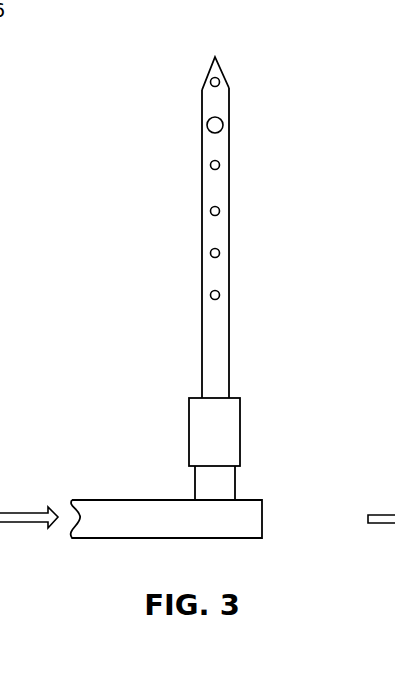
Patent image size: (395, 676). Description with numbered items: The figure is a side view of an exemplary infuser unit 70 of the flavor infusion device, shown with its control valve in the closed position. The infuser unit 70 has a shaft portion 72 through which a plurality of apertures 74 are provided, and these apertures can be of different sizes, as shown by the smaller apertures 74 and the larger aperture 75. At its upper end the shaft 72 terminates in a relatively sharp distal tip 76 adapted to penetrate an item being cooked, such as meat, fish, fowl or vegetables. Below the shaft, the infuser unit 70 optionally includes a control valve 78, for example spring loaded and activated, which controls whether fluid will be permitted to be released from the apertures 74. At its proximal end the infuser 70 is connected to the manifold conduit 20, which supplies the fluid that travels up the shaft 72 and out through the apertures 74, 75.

The infuser unit 70 is at (292, 200).
The shaft portion 72 is at (218, 333).
The apertures 74 is at (219, 165).
The aperture of different size 75 is at (223, 123).
The distal tip 76 is at (218, 58).
The control valve 78 is at (232, 420).
The manifold conduit 20 is at (252, 523).